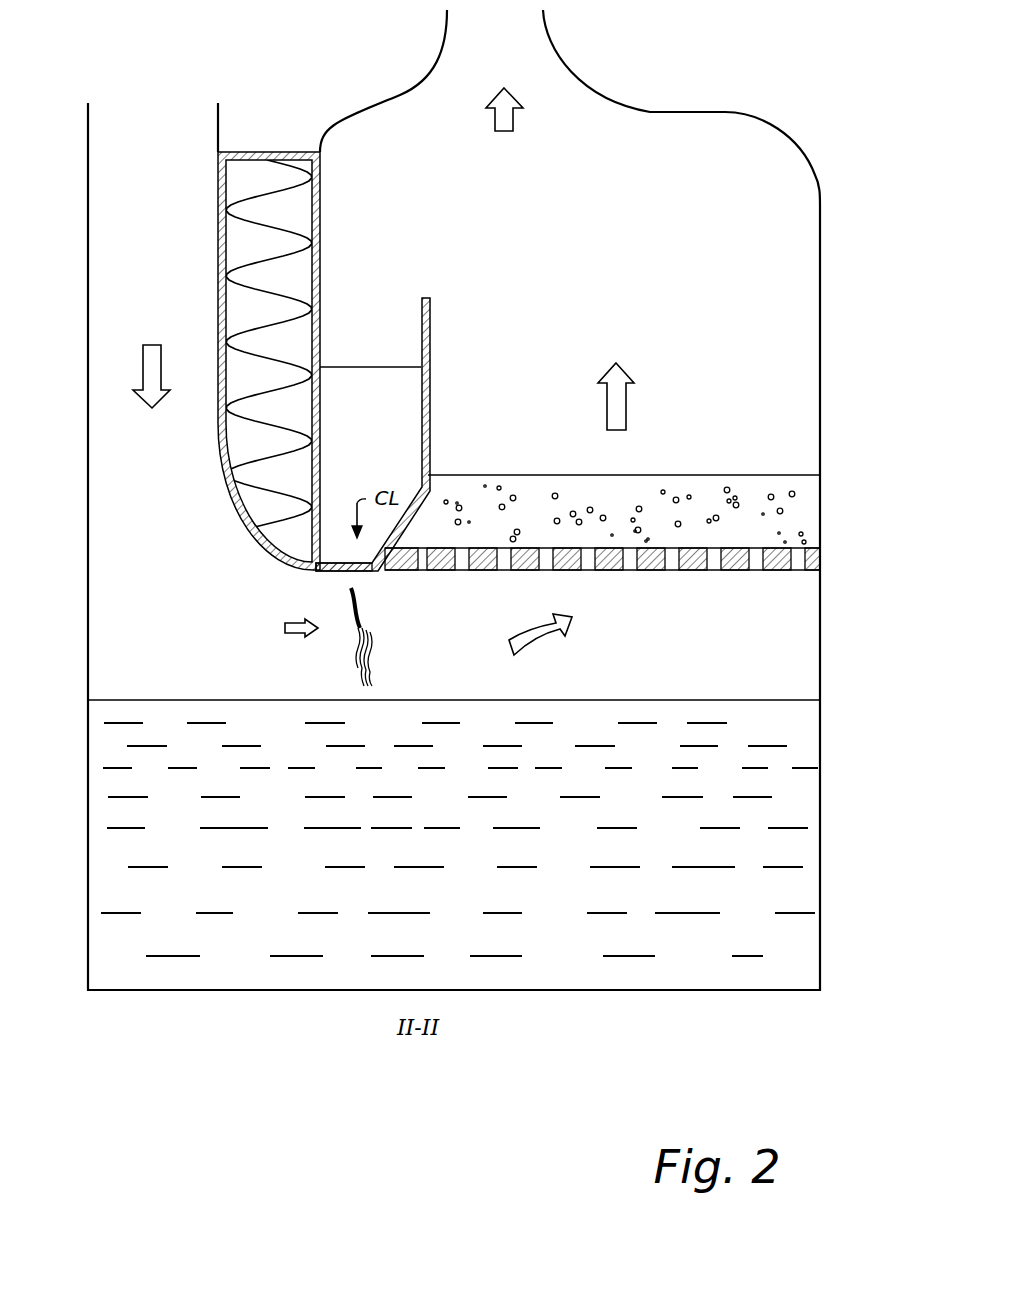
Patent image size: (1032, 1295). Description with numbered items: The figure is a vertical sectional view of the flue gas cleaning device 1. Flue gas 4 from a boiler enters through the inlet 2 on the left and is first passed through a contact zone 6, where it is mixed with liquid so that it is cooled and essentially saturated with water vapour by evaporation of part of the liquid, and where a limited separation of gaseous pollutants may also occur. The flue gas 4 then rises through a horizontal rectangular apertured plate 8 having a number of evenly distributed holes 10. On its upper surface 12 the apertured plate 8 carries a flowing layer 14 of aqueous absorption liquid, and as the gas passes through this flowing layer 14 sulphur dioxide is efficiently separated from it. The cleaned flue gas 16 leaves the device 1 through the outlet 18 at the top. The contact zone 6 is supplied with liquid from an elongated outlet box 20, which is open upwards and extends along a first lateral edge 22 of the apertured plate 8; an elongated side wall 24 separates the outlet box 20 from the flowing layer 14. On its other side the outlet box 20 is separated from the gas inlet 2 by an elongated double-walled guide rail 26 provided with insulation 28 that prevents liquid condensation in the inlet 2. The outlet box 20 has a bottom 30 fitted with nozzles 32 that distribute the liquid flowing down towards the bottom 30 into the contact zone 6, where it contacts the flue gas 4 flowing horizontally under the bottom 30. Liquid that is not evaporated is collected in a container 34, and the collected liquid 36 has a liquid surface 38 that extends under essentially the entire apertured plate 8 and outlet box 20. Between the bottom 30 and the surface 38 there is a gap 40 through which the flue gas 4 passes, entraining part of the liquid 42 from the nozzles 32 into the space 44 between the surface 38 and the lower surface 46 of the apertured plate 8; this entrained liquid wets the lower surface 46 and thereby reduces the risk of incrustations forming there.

The device 1 is at (262, 1042).
The inlet 2 is at (88, 212).
The flue gas 4 is at (143, 360).
The contact zone 6 is at (355, 652).
The apertured plate 8 is at (650, 572).
The holes 10 is at (470, 572).
The upper surface 12 is at (694, 545).
The flowing layer 14 is at (530, 500).
The cleaned flue gas 16 is at (513, 120).
The outlet 18 is at (600, 62).
The outlet box 20 is at (394, 306).
The first lateral edge 22 is at (380, 572).
The side wall 24 is at (431, 325).
The guide rail 26 is at (228, 478).
The insulation 28 is at (243, 245).
The bottom 30 is at (312, 576).
The nozzles 32 is at (350, 588).
The container 34 is at (87, 955).
The liquid 36 is at (558, 917).
The liquid surface 38 is at (695, 700).
The gap 40 is at (335, 620).
The liquid 42 is at (388, 668).
The space 44 is at (760, 635).
The lower surface 46 is at (775, 570).